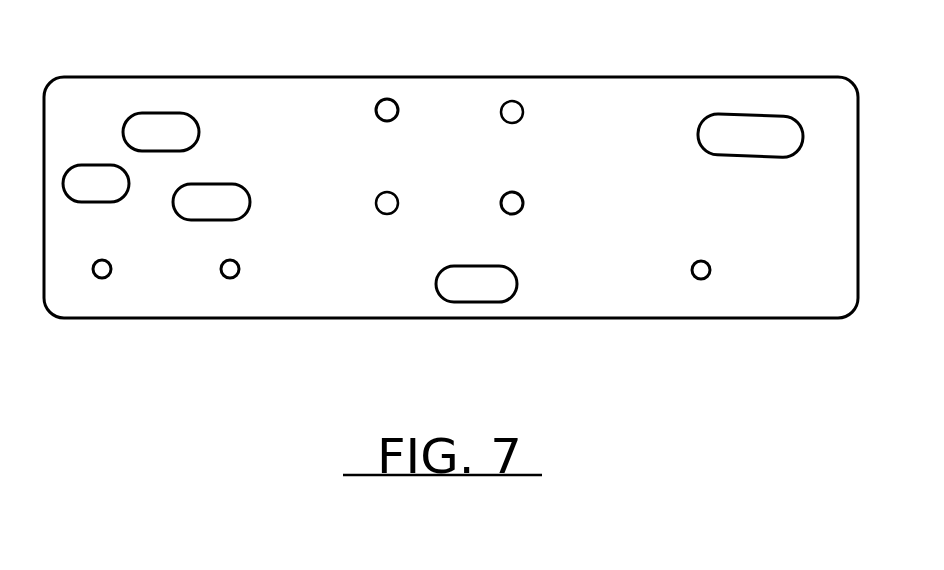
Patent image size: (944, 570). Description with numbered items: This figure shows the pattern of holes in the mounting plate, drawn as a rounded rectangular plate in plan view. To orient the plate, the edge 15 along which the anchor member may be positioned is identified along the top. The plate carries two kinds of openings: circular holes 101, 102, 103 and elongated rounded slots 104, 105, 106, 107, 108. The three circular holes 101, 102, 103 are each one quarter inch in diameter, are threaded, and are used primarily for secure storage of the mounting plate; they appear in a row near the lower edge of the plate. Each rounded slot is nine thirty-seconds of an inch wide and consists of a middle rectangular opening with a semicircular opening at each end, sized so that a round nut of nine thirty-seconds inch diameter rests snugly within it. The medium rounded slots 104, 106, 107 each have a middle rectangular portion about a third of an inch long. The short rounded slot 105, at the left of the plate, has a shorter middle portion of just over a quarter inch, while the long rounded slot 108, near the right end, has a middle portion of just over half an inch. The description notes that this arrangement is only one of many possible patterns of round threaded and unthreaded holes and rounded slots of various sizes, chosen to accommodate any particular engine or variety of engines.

The edge 15 is at (460, 77).
The circular hole 101 is at (100, 280).
The circular hole 102 is at (230, 280).
The circular hole 103 is at (695, 283).
The medium rounded slot 104 is at (142, 113).
The short rounded slot 105 is at (88, 165).
The medium rounded slot 106 is at (212, 184).
The medium rounded slot 107 is at (457, 302).
The long rounded slot 108 is at (738, 115).